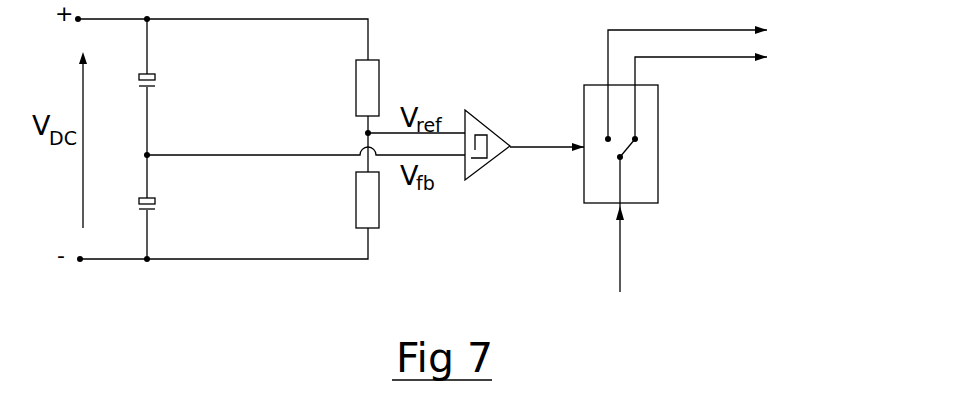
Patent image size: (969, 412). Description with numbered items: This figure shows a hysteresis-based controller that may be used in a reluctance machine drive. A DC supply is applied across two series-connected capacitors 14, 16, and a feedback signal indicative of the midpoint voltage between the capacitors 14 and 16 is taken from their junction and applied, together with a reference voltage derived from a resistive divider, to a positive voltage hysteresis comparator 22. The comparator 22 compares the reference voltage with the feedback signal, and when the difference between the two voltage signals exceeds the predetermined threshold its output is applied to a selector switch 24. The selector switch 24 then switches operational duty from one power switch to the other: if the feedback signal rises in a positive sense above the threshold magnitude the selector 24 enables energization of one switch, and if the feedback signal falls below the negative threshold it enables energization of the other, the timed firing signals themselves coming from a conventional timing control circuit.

The capacitor 14 is at (152, 77).
The capacitor 16 is at (152, 200).
The positive voltage hysteresis comparator 22 is at (488, 122).
The selector switch 24 is at (660, 137).